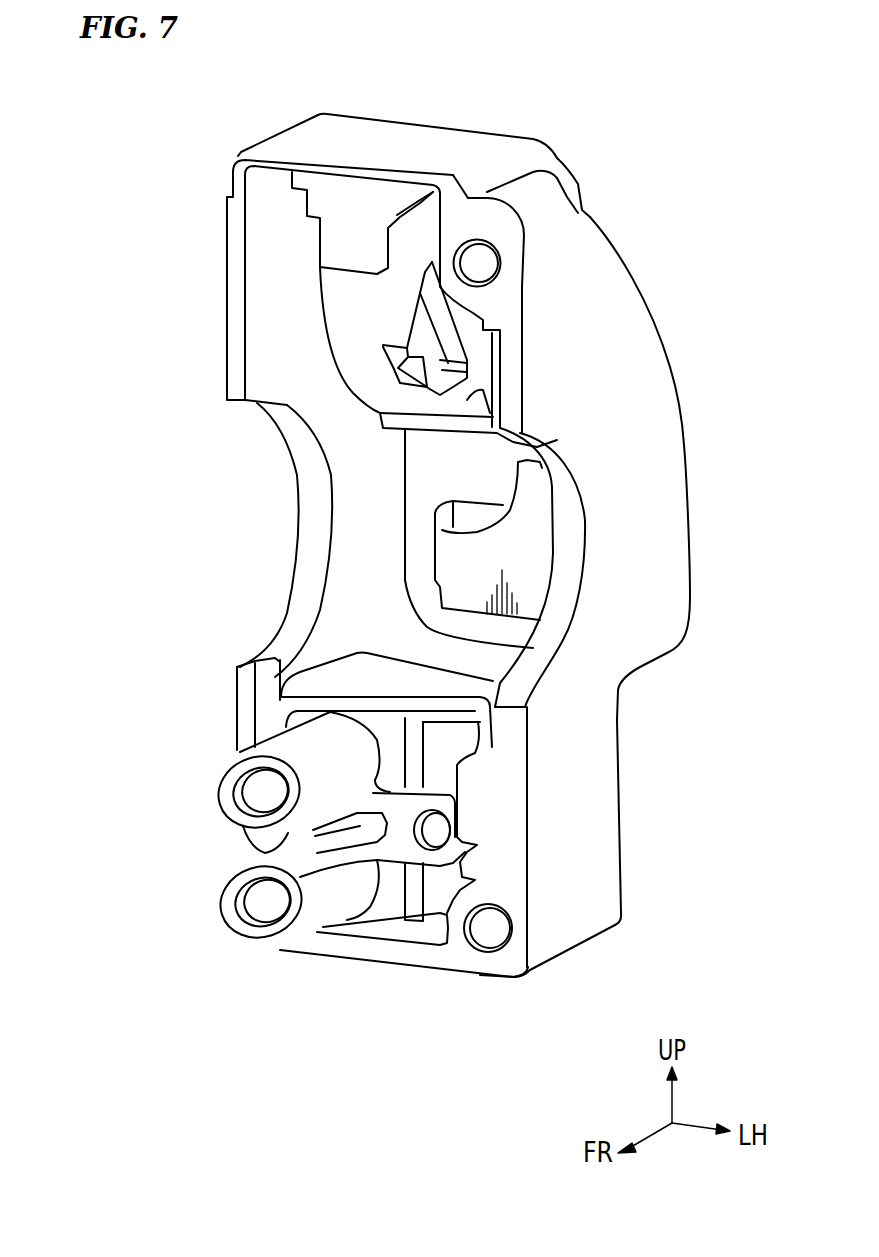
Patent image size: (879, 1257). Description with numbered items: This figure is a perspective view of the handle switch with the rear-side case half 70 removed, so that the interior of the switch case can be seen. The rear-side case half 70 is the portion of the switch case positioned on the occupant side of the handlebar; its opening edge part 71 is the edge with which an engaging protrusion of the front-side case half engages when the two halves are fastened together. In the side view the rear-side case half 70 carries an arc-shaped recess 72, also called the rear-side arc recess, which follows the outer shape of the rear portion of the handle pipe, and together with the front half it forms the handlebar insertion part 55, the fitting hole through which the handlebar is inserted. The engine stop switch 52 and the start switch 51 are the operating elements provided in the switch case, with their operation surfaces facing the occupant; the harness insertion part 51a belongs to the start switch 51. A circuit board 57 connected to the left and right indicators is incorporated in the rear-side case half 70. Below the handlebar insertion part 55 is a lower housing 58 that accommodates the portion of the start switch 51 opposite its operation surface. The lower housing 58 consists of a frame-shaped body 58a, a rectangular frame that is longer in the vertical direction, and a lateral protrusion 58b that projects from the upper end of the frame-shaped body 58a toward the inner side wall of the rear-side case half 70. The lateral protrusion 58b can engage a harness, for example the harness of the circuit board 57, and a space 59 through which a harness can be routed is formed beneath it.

The rear-side case half 70 is at (575, 187).
The opening edge part 71 is at (237, 347).
The engine stop switch 52 is at (338, 307).
The arc-shaped recess 72 is at (247, 538).
The handlebar insertion part 55 is at (310, 513).
The circuit board 57 is at (524, 537).
The lower housing 58 is at (272, 712).
The frame-shaped body 58a is at (400, 923).
The lateral protrusion 58b is at (487, 689).
The space 59 is at (450, 738).
The harness insertion part 51a is at (284, 865).
The start switch 51 is at (223, 923).